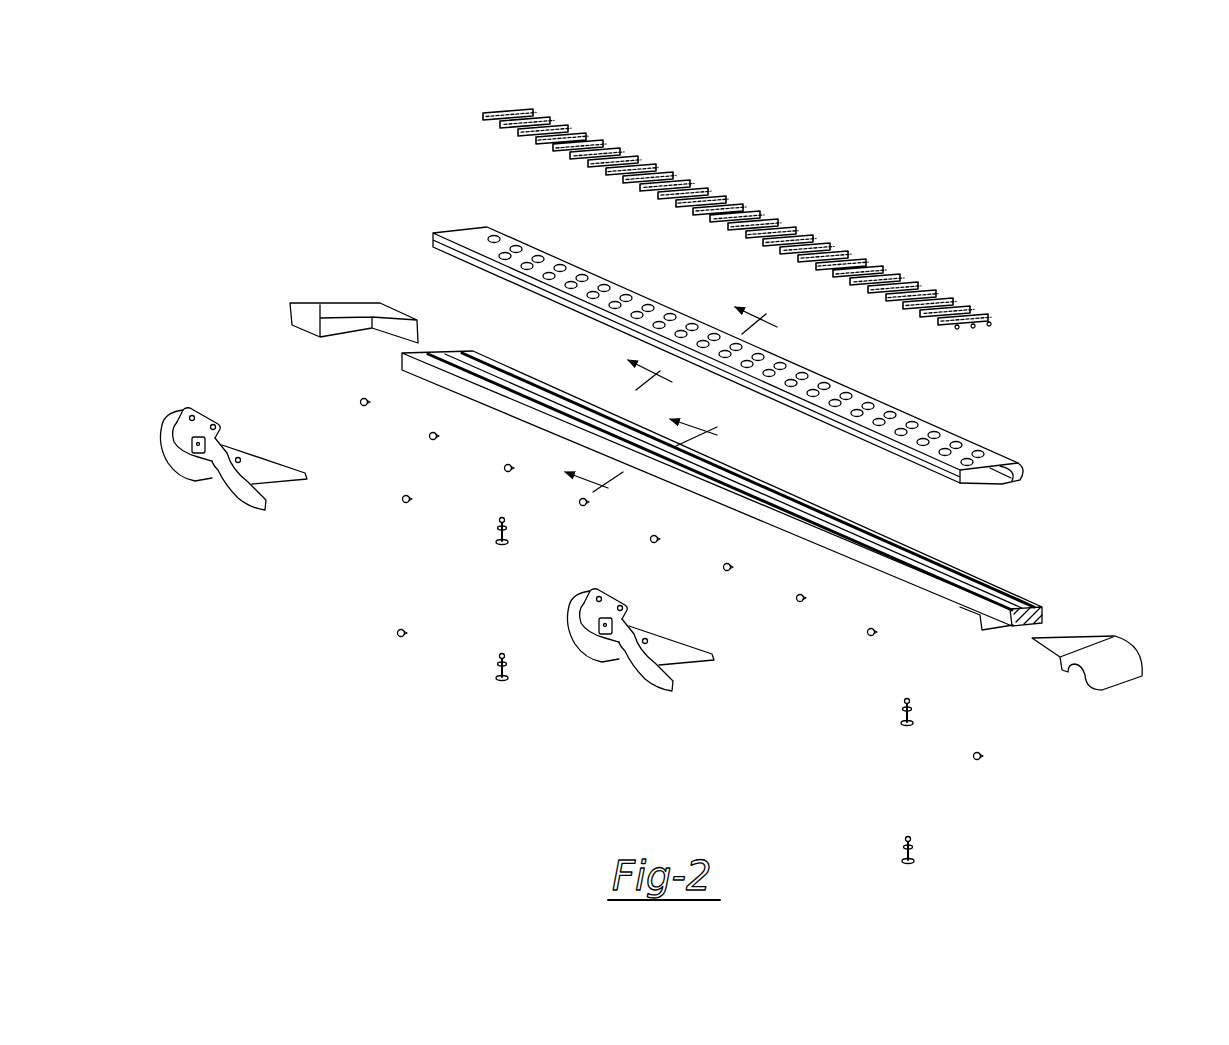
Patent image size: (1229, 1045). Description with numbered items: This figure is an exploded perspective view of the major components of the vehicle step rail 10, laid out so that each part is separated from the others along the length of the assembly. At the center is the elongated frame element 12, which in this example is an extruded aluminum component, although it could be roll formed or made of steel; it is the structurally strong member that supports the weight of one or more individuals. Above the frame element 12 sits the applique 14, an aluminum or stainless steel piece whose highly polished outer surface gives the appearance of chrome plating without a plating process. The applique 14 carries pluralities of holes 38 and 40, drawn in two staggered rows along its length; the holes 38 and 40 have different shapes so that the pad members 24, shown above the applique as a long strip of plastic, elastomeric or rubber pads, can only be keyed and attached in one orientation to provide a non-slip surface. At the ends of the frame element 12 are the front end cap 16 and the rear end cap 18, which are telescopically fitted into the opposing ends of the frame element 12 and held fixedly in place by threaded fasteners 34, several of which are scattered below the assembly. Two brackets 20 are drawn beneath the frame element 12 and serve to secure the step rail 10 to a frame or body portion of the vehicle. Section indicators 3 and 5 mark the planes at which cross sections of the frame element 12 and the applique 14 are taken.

The vehicle step rail 10 is at (218, 150).
The elongated frame element 12 is at (988, 580).
The applique 14 is at (1005, 452).
The front end cap 16 is at (1122, 633).
The rear end cap 18 is at (312, 300).
The brackets 20 is at (255, 503).
The pad members 24 is at (573, 135).
The threaded fasteners 34 is at (436, 440).
The holes 38 is at (602, 275).
The holes 40 is at (548, 273).
The section line 3- 3 is at (651, 464).
The section line 5- 5 is at (714, 350).